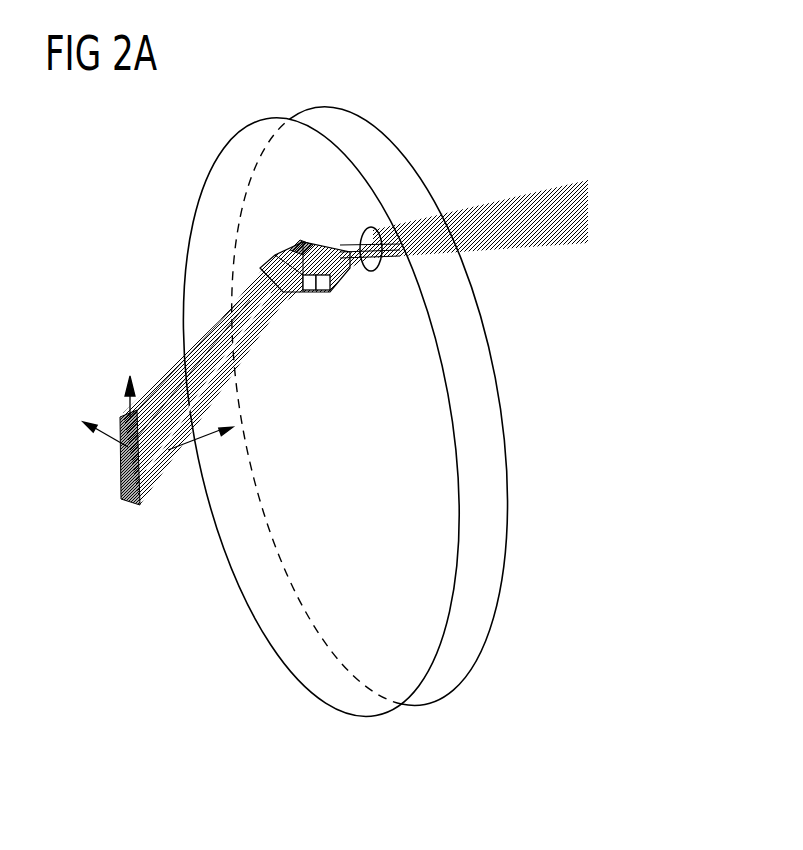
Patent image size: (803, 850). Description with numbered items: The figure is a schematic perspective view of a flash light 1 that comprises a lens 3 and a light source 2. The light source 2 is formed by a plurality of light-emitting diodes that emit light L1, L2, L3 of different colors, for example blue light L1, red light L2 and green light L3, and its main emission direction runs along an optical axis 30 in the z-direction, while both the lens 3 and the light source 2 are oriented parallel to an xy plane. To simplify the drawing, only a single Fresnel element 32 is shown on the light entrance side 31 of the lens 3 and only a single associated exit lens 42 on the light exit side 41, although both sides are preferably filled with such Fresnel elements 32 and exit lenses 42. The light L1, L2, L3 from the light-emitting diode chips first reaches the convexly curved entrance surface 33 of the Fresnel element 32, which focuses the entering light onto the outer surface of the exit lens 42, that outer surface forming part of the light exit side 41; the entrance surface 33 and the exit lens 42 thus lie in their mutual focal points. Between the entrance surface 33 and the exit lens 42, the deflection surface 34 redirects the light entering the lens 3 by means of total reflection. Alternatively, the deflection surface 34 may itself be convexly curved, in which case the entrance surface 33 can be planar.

The flash light 1 is at (468, 97).
The light source 2 is at (70, 410).
The lens 3 is at (357, 416).
The optical axis 30 is at (186, 450).
The light entrance side 31 is at (281, 636).
The Fresnel element 32 is at (272, 256).
The entrance surface 33 is at (307, 293).
The deflection surface 34 is at (301, 240).
The light exit side 41 is at (523, 529).
The exit lens 42 is at (376, 272).
The blue light L1 is at (243, 347).
The red light L2 is at (165, 383).
The green light L3 is at (222, 330).